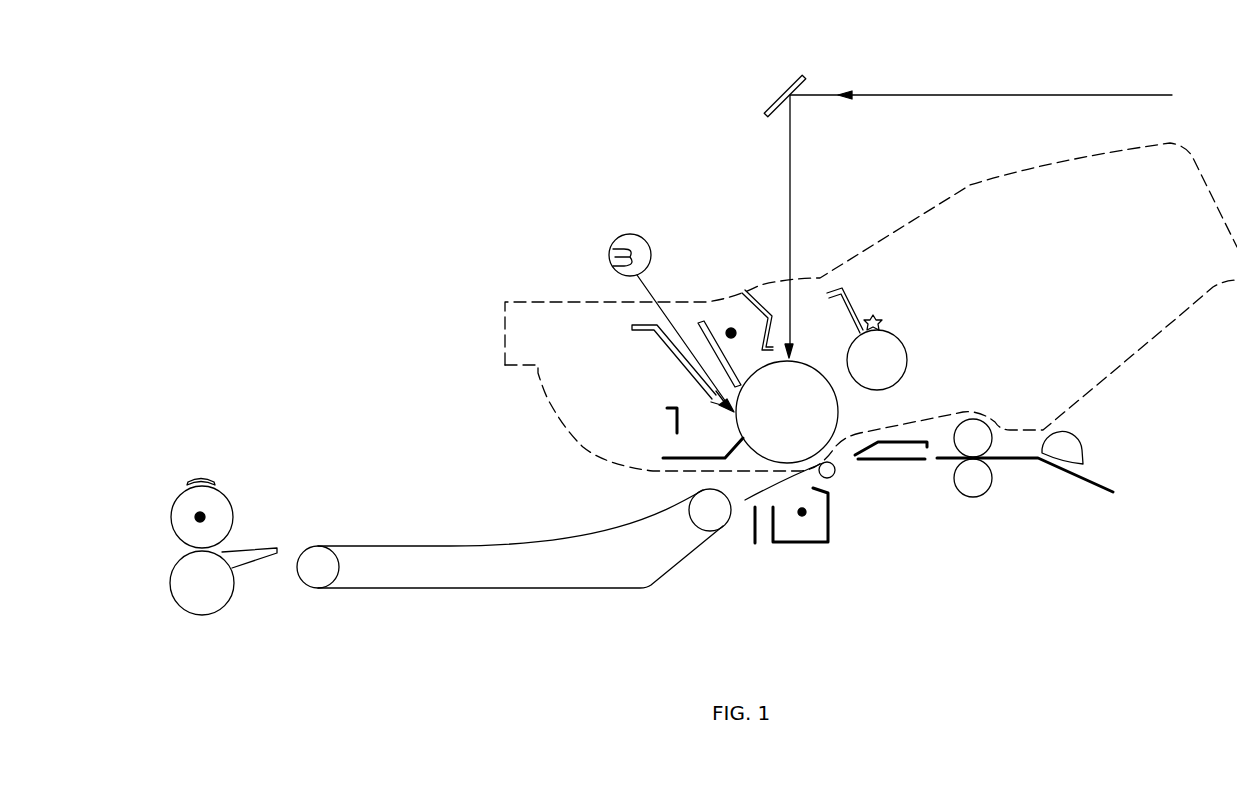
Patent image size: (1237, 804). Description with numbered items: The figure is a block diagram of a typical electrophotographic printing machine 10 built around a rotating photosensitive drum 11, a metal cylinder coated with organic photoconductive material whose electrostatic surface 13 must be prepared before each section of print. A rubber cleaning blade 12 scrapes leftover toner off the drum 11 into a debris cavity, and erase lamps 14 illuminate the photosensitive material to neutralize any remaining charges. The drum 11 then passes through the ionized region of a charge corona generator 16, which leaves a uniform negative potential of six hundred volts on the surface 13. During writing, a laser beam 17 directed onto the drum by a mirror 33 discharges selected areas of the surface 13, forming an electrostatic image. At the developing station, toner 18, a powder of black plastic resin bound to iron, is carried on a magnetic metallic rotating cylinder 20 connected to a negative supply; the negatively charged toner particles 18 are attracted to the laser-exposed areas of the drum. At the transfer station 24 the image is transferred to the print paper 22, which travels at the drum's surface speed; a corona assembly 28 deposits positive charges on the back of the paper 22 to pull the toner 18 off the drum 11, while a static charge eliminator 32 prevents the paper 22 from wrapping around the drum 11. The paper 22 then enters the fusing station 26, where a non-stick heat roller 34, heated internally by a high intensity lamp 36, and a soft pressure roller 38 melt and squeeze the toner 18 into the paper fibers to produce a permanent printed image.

The printing machine 10 is at (628, 167).
The photosensitive drum 11 is at (798, 408).
The cleaning blade 12 is at (708, 409).
The electrostatic surface 13 is at (802, 357).
The erase lamps 14 is at (598, 250).
The charge corona generator 16 is at (731, 333).
The laser beam 17 is at (1002, 95).
The toner 18 is at (878, 325).
The rotating cylinder 20 is at (912, 358).
The print paper 22 is at (757, 496).
The transfer station 24 is at (755, 567).
The fusing station 26 is at (158, 622).
The corona assembly 28 is at (802, 512).
The static charge eliminator 32 is at (752, 527).
The mirror 33 is at (770, 88).
The heat roller 34 is at (227, 493).
The lamp 36 is at (200, 517).
The pressure roller 38 is at (238, 588).